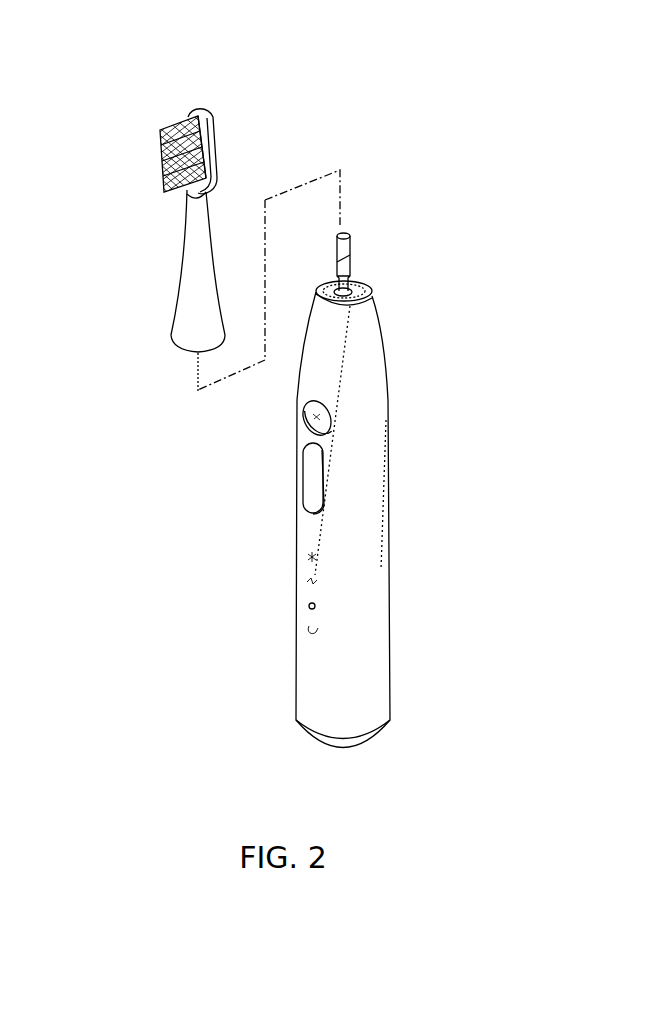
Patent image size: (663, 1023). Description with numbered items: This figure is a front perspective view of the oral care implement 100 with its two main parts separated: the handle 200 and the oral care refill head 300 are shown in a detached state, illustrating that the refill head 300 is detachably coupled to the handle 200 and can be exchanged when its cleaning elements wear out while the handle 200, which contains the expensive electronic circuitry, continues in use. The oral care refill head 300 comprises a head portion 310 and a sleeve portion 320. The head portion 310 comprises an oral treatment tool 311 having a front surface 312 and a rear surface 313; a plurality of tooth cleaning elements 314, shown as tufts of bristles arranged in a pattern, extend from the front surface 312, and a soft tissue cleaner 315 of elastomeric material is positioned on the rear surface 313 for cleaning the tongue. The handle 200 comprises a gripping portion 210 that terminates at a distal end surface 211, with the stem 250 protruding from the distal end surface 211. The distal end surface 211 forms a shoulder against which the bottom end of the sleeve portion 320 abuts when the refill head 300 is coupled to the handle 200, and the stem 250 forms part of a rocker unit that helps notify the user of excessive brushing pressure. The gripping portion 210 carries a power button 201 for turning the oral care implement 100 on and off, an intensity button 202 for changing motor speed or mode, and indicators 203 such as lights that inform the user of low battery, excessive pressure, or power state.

The oral care implement 100 is at (418, 192).
The handle 200 is at (418, 518).
The power button 201 is at (303, 418).
The intensity button 202 is at (313, 480).
The indicators 203 is at (290, 603).
The gripping portion 210 is at (357, 642).
The distal end surface 211 is at (370, 285).
The stem 250 is at (350, 257).
The oral care refill head 300 is at (170, 247).
The head portion 310 is at (143, 175).
The oral treatment tool 311 is at (208, 148).
The front surface 312 is at (212, 118).
The rear surface 313 is at (217, 163).
The tooth cleaning elements 314 is at (169, 148).
The soft tissue cleaner 315 is at (214, 121).
The sleeve portion 320 is at (193, 303).